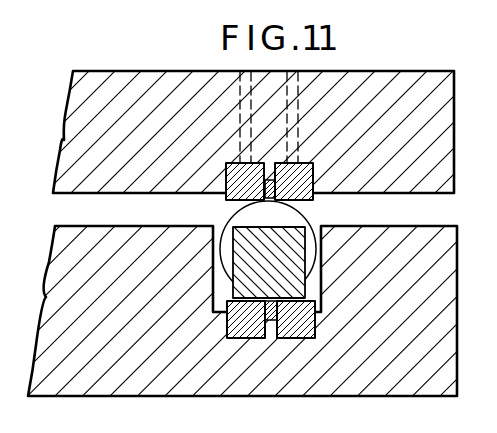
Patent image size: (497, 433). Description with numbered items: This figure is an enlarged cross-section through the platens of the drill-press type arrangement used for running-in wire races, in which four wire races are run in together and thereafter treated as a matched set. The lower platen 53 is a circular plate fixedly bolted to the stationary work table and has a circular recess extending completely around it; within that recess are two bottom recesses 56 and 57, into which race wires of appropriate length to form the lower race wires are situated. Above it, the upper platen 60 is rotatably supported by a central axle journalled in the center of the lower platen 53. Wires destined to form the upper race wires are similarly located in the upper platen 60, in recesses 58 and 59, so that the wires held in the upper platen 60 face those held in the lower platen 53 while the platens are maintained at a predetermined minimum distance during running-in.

The lower platen 53 is at (408, 330).
The bottom recess 56 is at (302, 341).
The bottom recess 57 is at (228, 340).
The recess 58 is at (227, 163).
The recess 59 is at (313, 163).
The upper platen 60 is at (408, 138).